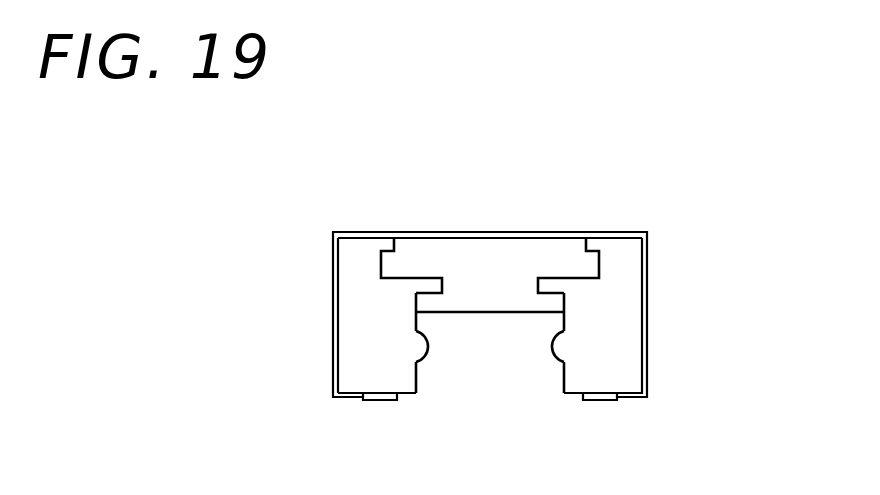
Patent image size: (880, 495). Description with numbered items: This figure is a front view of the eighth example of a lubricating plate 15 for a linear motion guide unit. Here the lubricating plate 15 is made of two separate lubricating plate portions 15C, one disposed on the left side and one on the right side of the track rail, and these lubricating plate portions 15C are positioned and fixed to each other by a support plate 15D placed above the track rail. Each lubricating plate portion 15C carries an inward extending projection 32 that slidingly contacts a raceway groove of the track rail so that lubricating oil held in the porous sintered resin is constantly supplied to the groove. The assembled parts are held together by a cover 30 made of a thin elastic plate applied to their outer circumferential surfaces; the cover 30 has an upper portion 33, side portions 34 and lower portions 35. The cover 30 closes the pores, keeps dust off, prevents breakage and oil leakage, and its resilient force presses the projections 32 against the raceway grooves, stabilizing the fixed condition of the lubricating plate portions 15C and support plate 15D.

The lubricating plate 15 is at (487, 280).
The lubricating plate portion 15C is at (372, 312).
The support plate 15D is at (498, 257).
The cover 30 is at (643, 263).
The projection 32 is at (421, 346).
The upper portion 33 is at (413, 233).
The side portion 34 is at (337, 264).
The lower portion 35 is at (364, 401).